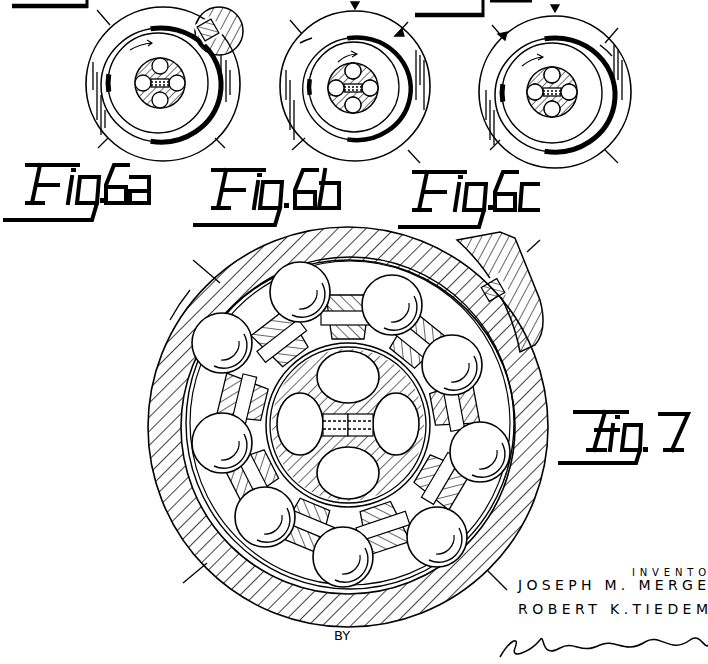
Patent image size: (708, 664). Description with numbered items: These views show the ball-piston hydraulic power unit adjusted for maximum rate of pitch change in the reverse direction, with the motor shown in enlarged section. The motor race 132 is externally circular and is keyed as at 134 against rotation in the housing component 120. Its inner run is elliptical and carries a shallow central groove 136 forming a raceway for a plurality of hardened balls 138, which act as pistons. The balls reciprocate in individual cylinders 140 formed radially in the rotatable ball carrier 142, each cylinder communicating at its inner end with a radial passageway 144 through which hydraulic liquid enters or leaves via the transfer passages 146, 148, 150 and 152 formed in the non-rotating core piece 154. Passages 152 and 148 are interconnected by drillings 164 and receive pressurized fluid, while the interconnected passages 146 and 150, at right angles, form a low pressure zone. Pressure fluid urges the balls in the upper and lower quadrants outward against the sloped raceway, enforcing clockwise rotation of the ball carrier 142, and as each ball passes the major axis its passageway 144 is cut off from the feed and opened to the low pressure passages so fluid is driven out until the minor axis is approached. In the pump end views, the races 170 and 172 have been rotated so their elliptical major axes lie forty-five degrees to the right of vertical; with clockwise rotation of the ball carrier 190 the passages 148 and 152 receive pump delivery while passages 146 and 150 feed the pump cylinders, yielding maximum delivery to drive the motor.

In FIG. 7, the housing component 120 is at (528, 272).
In FIG. 7, the motor race 132 is at (184, 319).
In FIG. 7, the key 134 is at (498, 289).
In FIG. 7, the central groove 136 is at (190, 407).
In FIG. 7, the balls 138 is at (300, 292).
In FIG. 7, the cylinders 140 is at (207, 386).
In FIG. 6A, the ball carrier 142 is at (127, 58).
In FIG. 7, the ball carrier 142 is at (227, 300).
In FIG. 7, the radial passageway 144 is at (440, 436).
In FIG. 6B, the transfer passage 146 is at (360, 69).
In FIG. 6C, the transfer passage 146 is at (557, 72).
In FIG. 7, the transfer passage 146 is at (348, 377).
In FIG. 6B, the transfer passage 148 is at (377, 89).
In FIG. 6C, the transfer passage 148 is at (577, 96).
In FIG. 7, the transfer passage 148 is at (395, 424).
In FIG. 6B, the transfer passage 150 is at (350, 108).
In FIG. 6C, the transfer passage 150 is at (562, 116).
In FIG. 7, the transfer passage 150 is at (348, 473).
In FIG. 6B, the transfer passage 152 is at (332, 90).
In FIG. 6C, the transfer passage 152 is at (532, 88).
In FIG. 7, the transfer passage 152 is at (300, 424).
In FIG. 7, the core piece 154 is at (324, 444).
In FIG. 7, the drillings 164 is at (371, 442).
In FIG. 6B, the race 170 is at (300, 43).
In FIG. 6C, the race 172 is at (612, 50).
In FIG. 6B, the ball carrier 190 is at (318, 62).
In FIG. 6C, the ball carrier 190 is at (572, 48).